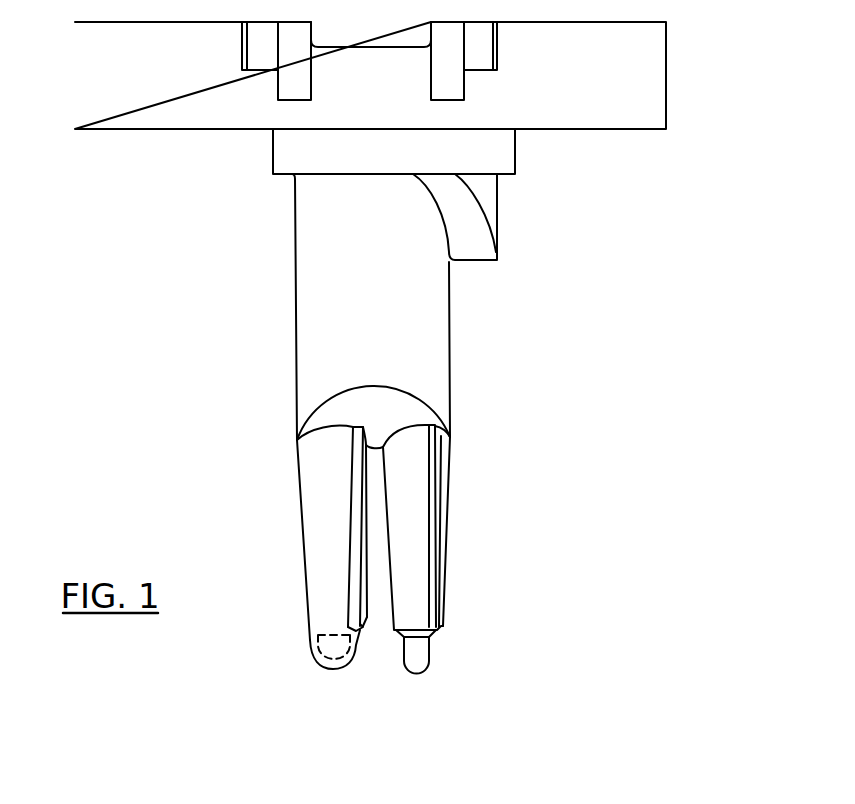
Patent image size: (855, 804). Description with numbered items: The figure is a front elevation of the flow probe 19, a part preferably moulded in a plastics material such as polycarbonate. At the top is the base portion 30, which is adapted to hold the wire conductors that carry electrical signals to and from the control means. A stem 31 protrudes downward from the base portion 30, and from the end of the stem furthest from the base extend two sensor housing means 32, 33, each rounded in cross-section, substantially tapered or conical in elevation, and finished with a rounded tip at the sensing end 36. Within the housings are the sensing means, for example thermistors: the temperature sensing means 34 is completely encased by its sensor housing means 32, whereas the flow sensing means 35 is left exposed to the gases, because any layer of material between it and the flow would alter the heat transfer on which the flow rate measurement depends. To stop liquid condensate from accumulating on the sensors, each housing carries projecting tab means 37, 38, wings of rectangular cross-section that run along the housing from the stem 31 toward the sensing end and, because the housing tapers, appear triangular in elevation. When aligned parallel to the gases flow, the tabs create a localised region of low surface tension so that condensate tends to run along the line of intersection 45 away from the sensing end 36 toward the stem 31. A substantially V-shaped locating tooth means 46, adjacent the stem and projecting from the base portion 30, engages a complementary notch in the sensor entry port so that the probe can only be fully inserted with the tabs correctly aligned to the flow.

The flow probe 19 is at (138, 377).
The base portion 30 is at (667, 70).
The stem 31 is at (295, 283).
The sensor housing means 32 is at (298, 483).
The sensor housing means 33 is at (450, 470).
The temperature sensing means 34 is at (342, 665).
The flow sensing means 35 is at (425, 673).
The sensing end 36 is at (325, 665).
The projecting tab means 37 is at (438, 593).
The projecting tab means 38 is at (367, 617).
The line of intersection 45 is at (430, 566).
The locating tooth means 46 is at (488, 198).